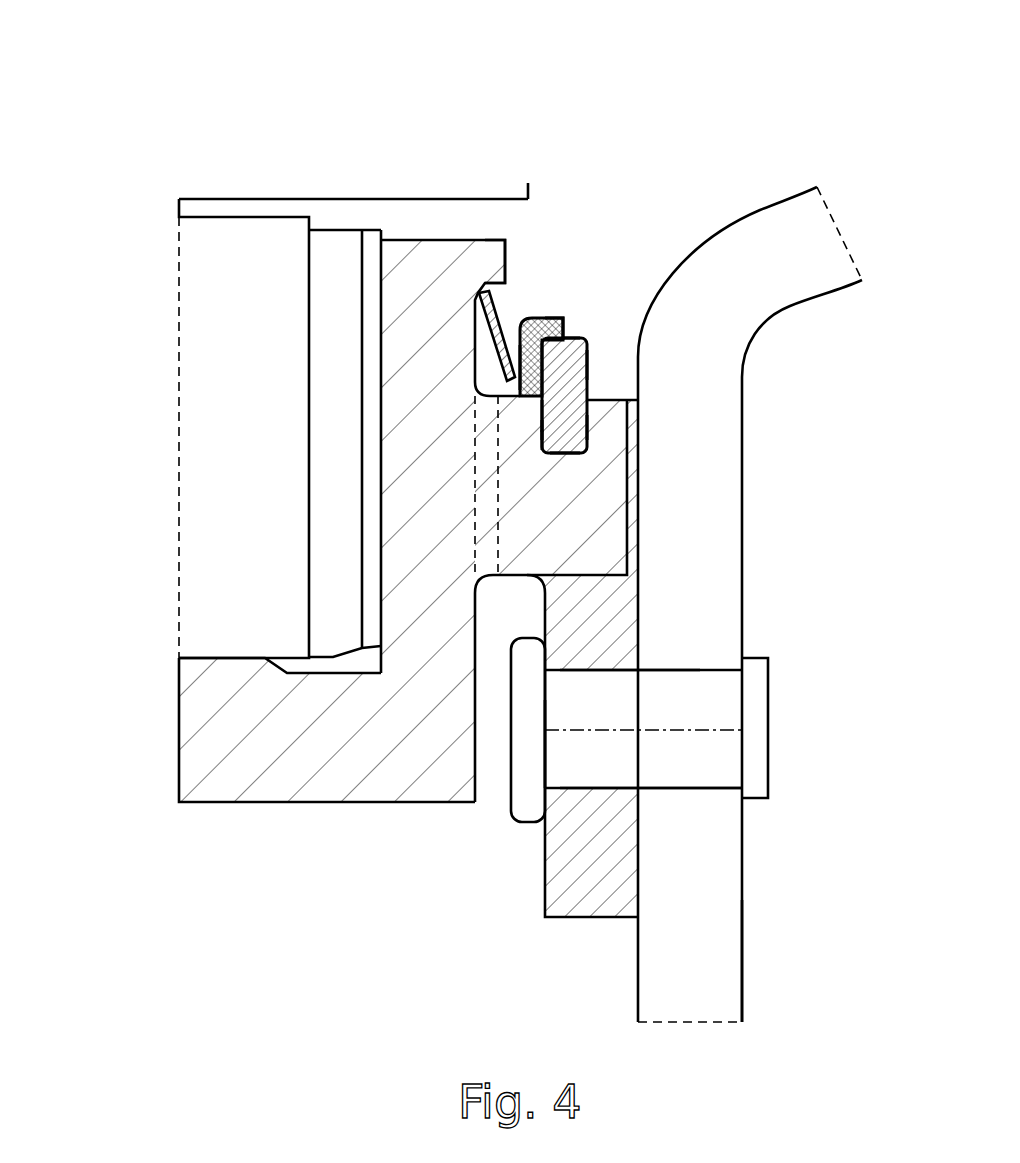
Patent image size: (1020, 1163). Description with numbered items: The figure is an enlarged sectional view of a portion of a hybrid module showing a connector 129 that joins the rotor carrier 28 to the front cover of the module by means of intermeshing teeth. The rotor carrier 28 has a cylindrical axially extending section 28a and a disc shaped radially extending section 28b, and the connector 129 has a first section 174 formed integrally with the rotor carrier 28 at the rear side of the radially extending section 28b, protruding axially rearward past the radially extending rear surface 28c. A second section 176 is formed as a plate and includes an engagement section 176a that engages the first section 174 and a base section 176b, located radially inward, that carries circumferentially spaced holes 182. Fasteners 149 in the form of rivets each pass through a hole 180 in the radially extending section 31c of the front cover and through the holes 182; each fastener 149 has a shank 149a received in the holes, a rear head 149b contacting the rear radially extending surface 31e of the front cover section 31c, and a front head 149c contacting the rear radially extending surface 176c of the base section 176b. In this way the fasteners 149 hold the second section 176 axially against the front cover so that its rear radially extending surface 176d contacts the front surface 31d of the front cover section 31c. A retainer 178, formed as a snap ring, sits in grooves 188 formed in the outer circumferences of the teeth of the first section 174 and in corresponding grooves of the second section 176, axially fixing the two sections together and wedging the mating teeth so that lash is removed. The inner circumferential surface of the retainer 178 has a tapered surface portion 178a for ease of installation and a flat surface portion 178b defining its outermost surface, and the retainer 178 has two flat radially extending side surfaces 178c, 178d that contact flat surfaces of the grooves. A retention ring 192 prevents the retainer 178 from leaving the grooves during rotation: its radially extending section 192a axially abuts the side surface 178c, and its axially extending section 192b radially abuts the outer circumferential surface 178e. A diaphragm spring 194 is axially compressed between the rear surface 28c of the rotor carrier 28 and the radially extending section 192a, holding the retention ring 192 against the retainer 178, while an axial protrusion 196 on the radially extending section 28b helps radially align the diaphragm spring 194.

The connector 129 is at (636, 103).
The rotor carrier 28 is at (304, 548).
The cylindrical axially extending section 28a is at (205, 715).
The disc shaped radially extending section 28b is at (407, 509).
The radially extending rear surface 28c is at (475, 630).
The radially extending section of front cover 31c is at (715, 947).
The outer surface of front cover section 31d is at (638, 592).
The rear radially extending surface of front cover section 31e is at (742, 995).
The fasteners 149 is at (637, 784).
The shank 149a is at (594, 770).
The rear head 149b is at (763, 767).
The front head 149c is at (523, 786).
The first section 174 is at (590, 523).
The second section 176 is at (611, 715).
The engagement section 176a is at (638, 535).
The base section 176b is at (590, 897).
The rear radially extending surface of base section 176c is at (547, 608).
The rear radially extending surface of second section 176d is at (638, 845).
The retainer 178 is at (486, 349).
The tapered surface portion 178a is at (585, 428).
The flat surface portion 178b is at (562, 453).
The flat radially extending side surface 178c is at (541, 408).
The flat radially extending side surface 178d is at (585, 408).
The outer circumferential surface 178e is at (568, 338).
The hole 180 is at (682, 790).
The holes 182 is at (600, 670).
The grooves 188 is at (541, 437).
The retention ring 192 is at (347, 297).
The radially extending section 192a is at (532, 347).
The axially extending section 192b is at (548, 335).
The diaphragm spring 194 is at (478, 292).
The axial protrusion 196 is at (487, 260).